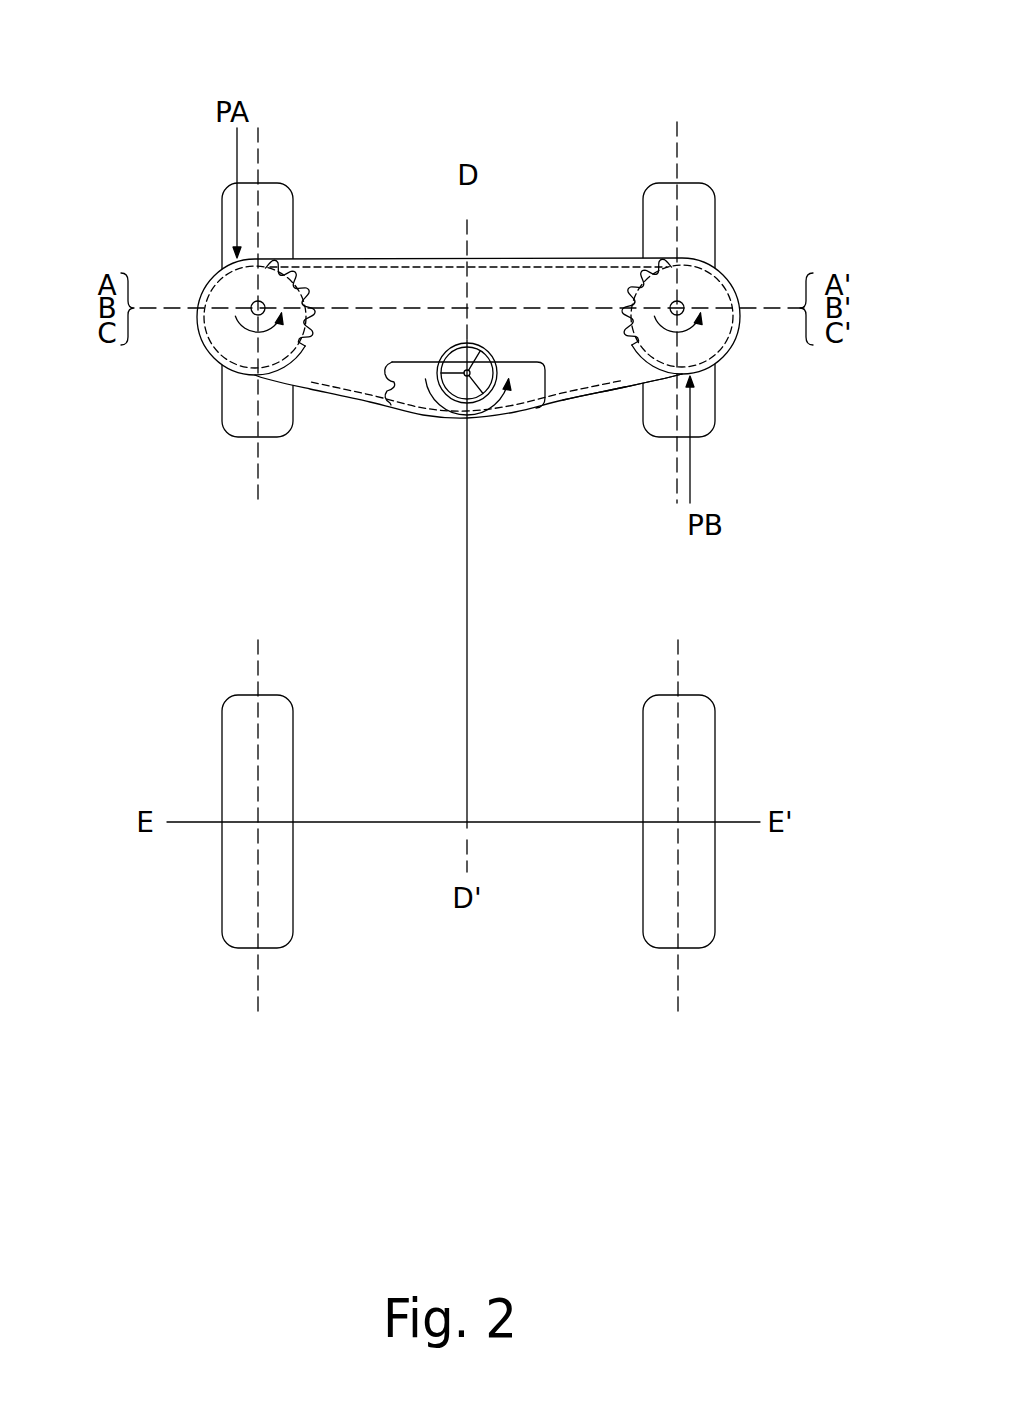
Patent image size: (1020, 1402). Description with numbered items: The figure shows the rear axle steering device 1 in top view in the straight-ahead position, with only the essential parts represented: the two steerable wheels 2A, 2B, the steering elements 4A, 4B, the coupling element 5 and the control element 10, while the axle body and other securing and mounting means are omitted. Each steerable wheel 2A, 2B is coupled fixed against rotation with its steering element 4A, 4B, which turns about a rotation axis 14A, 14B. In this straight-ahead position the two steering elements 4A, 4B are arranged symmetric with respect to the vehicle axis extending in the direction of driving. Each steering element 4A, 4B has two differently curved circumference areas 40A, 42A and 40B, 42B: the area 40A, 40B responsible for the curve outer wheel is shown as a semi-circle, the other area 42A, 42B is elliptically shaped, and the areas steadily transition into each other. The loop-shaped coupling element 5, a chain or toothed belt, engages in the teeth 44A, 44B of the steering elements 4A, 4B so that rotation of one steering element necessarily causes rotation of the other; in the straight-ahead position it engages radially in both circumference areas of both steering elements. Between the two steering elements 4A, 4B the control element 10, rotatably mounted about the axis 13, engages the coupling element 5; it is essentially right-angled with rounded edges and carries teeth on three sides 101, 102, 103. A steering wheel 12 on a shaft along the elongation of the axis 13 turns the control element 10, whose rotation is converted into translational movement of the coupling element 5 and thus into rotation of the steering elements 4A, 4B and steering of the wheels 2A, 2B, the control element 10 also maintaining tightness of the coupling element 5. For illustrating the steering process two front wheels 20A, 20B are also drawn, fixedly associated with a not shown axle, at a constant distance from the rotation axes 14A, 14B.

The rear axle steering device 1 is at (711, 92).
The steerable wheel 2A is at (237, 410).
The steerable wheel 2B is at (705, 410).
The steering element 4A is at (225, 282).
The steering element 4B is at (707, 280).
The coupling element 5 is at (518, 258).
The control element 10 is at (532, 395).
The steering wheel 12 is at (483, 355).
The rotation axis 13 is at (468, 376).
The rotation axis 14A is at (252, 318).
The rotation axis 14B is at (684, 313).
The front wheel 20A is at (700, 783).
The front wheel 20B is at (273, 783).
The circumference area 40A is at (195, 325).
The circumference area 40B is at (740, 288).
The circumference area 42A is at (272, 268).
The circumference area 42B is at (672, 267).
The teeth 44A is at (303, 326).
The teeth 44B is at (636, 326).
The toothed side 101 is at (422, 416).
The toothed side 102 is at (548, 393).
The toothed side 103 is at (388, 403).